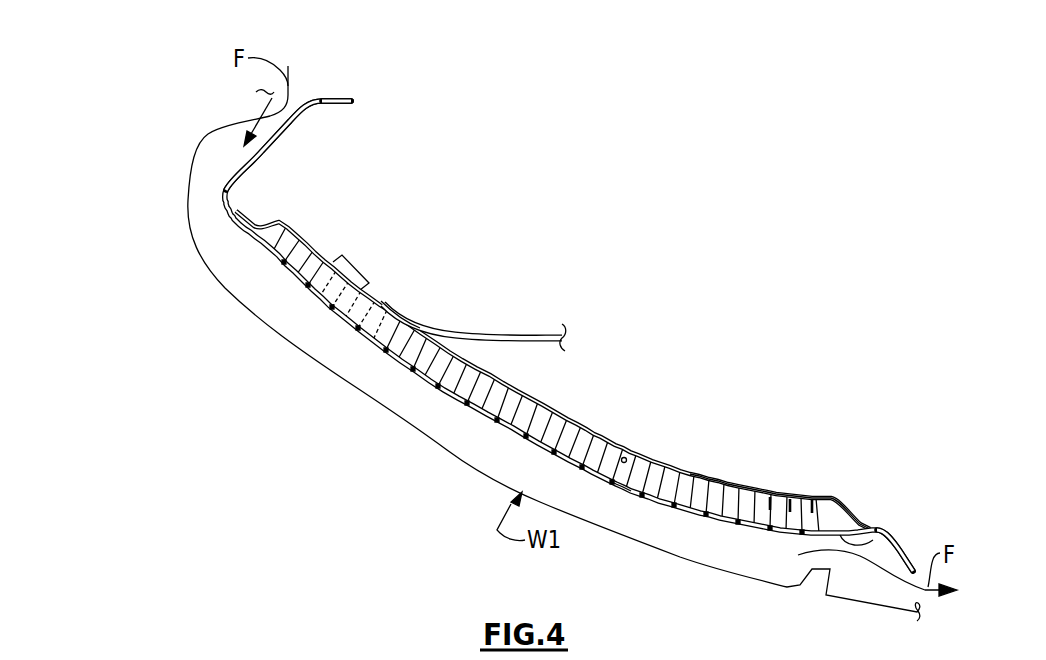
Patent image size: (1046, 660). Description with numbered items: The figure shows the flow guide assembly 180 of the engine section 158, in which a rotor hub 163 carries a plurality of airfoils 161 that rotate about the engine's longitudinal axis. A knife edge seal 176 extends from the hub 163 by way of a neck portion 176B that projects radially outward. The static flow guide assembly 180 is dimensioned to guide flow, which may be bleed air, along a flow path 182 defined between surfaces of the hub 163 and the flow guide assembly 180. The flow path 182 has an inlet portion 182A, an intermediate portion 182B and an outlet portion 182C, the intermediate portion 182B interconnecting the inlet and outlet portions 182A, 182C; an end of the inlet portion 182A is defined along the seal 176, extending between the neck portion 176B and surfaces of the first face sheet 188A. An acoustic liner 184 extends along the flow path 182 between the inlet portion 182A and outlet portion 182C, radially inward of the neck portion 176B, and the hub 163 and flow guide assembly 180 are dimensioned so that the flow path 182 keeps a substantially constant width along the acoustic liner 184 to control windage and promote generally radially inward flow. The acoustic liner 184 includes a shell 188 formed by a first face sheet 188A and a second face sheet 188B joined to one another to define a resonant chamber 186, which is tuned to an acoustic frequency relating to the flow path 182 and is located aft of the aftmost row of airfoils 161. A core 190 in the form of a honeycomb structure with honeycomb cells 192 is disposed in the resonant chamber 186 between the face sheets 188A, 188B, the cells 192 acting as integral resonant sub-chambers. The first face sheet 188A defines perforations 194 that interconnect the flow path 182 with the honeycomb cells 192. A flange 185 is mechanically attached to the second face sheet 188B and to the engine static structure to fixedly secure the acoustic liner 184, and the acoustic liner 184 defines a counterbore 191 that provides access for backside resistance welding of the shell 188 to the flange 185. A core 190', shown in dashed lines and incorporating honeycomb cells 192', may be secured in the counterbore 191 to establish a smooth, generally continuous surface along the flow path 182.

The section 158 is at (167, 49).
The airfoils 161 is at (491, 343).
The hub 163 is at (244, 284).
The seal 176 is at (206, 141).
The neck portion 176B is at (548, 343).
The flow guide assembly 180 is at (323, 84).
The flow path 182 is at (560, 424).
The inlet portion 182A is at (302, 112).
The intermediate portion 182B is at (421, 418).
The outlet portion 182C is at (877, 530).
The acoustic liner 184 is at (585, 430).
The flange 185 is at (475, 330).
The resonant chamber 186 is at (627, 458).
The shell 188 is at (682, 460).
The first face sheet 188A is at (722, 530).
The second face sheet 188B is at (713, 473).
The core 190 is at (875, 487).
The core 190' is at (418, 305).
The counterbore 191 is at (333, 262).
The honeycomb cells 192 is at (777, 477).
The honeycomb cells 192' is at (381, 293).
The perforations 194 is at (620, 490).